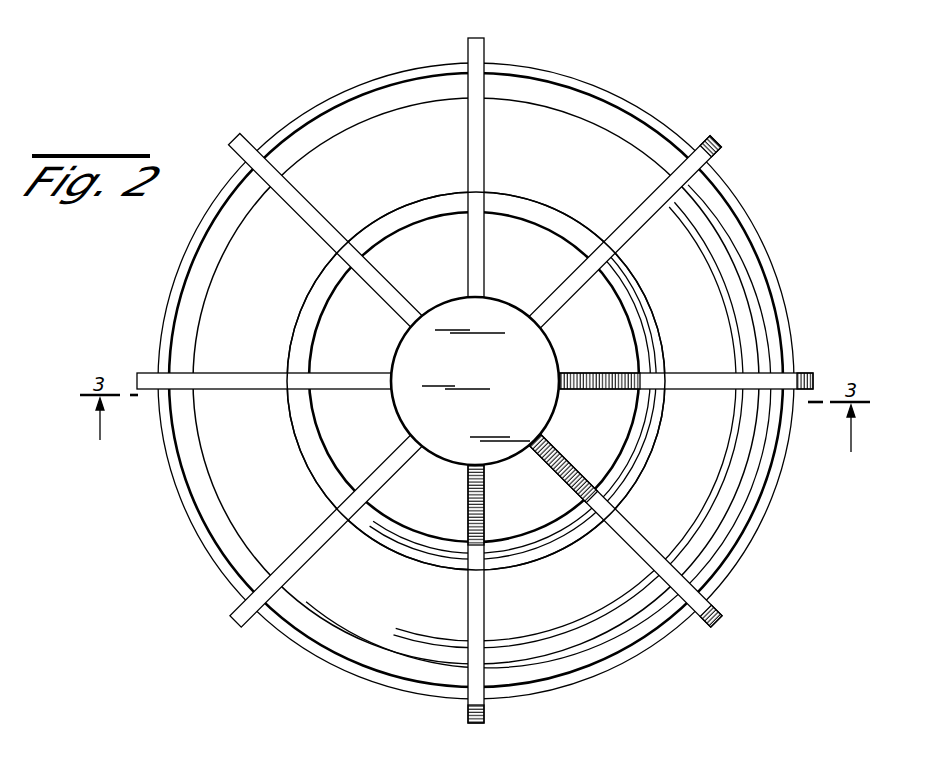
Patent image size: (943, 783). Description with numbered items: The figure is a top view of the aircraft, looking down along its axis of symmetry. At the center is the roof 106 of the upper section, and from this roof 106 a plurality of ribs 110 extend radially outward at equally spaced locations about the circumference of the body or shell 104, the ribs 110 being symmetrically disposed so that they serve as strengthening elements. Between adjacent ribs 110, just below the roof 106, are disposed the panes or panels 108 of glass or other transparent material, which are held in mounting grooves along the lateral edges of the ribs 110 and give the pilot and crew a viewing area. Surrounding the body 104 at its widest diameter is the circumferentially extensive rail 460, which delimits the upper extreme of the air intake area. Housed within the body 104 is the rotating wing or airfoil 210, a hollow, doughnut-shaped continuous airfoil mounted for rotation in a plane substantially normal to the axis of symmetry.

The body or shell 104 is at (640, 462).
The roof 106 is at (491, 369).
The panes or panels 108 is at (420, 269).
The ribs 110 is at (478, 46).
The rotating wing or airfoil 210 is at (700, 283).
The circumferentially extensive rail 460 is at (638, 112).